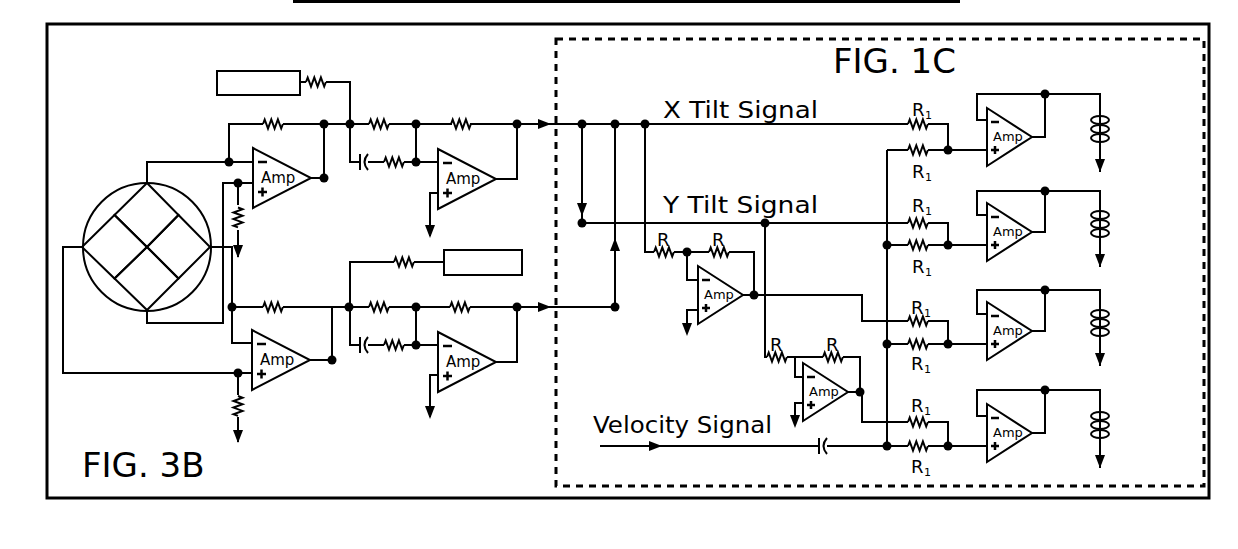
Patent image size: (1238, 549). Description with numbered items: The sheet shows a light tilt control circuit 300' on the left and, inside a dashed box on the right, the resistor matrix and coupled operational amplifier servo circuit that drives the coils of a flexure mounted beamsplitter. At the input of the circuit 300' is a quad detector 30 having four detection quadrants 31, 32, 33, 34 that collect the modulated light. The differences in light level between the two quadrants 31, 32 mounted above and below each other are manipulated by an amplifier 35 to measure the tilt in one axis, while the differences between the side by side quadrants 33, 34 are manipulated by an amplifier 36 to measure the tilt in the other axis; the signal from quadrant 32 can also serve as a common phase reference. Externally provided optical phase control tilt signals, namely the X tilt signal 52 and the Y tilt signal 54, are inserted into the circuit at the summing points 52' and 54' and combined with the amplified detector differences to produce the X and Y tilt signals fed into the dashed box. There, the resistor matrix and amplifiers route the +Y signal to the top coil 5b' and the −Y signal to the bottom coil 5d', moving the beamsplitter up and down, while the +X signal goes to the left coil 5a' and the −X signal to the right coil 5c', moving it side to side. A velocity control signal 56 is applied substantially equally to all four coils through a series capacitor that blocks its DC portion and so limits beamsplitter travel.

In FIG. 3B, the light tilt control circuit 300' is at (306, 239).
In FIG. 3B, the quad detector 30 is at (119, 185).
In FIG. 3B, the detection quadrant 31 is at (147, 215).
In FIG. 3B, the detection quadrant 32 is at (147, 278).
In FIG. 3B, the detection quadrant 33 is at (114, 247).
In FIG. 3B, the detection quadrant 34 is at (178, 247).
In FIG. 3B, the amplifier 35 is at (272, 204).
In FIG. 3B, the amplifier 36 is at (271, 386).
In FIG. 3B, the Y tilt signal 54 is at (259, 91).
In FIG. 3B, the Y tilt signal insertion point 54' is at (368, 93).
In FIG. 3B, the X tilt signal 52 is at (439, 255).
In FIG. 3B, the X tilt signal insertion point 52' is at (321, 281).
In FIG. 1C, the velocity control 56 is at (727, 460).
In FIG. 1C, the left coil 5a' is at (1068, 131).
In FIG. 1C, the top coil 5b' is at (1070, 232).
In FIG. 1C, the right coil 5c' is at (1076, 334).
In FIG. 1C, the bottom coil 5d' is at (1085, 434).